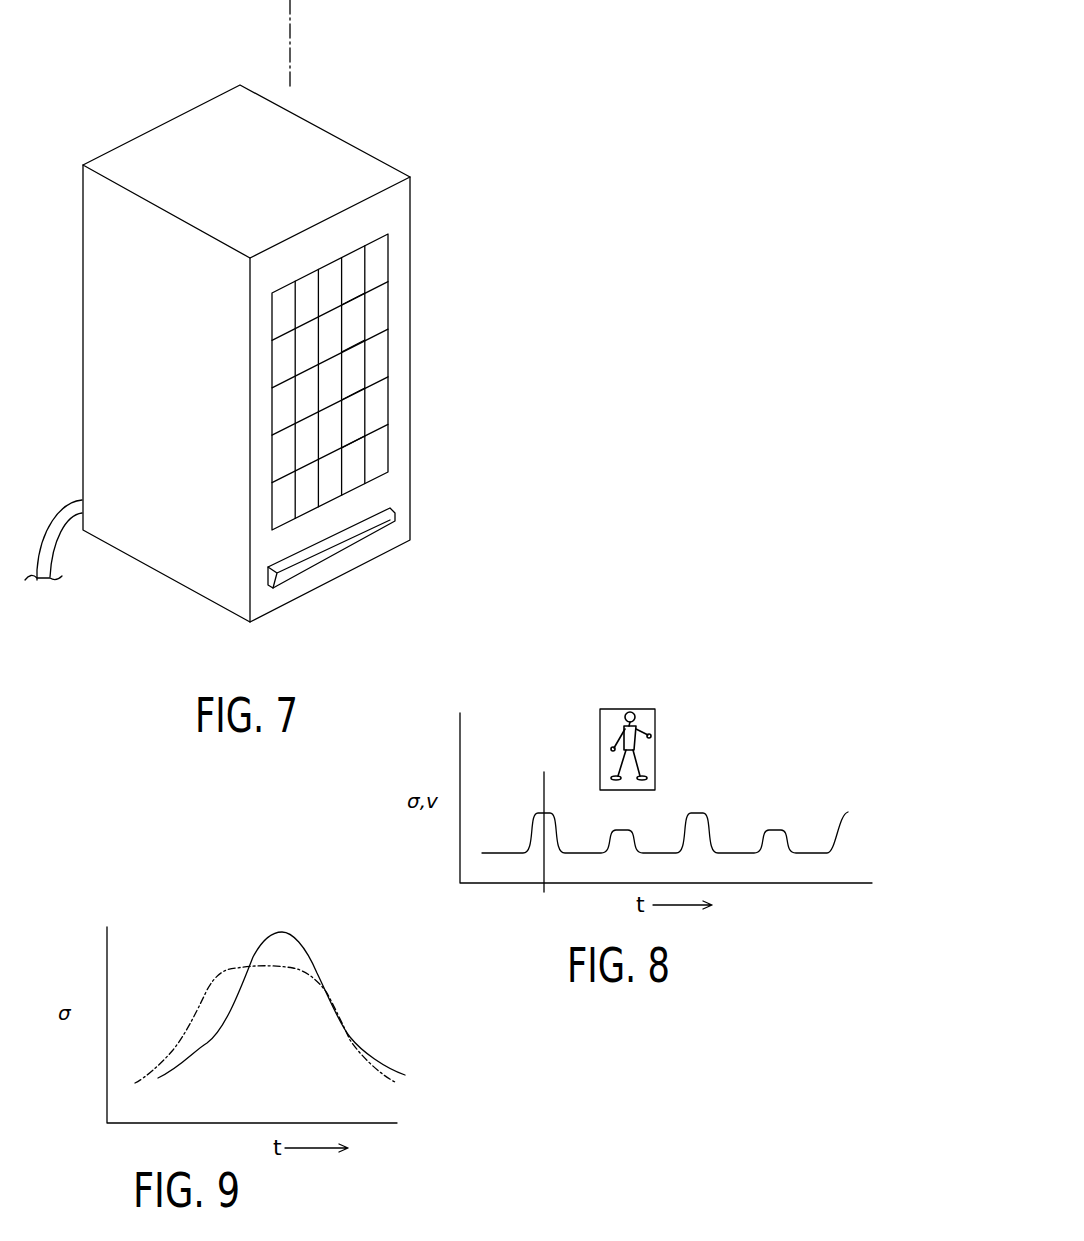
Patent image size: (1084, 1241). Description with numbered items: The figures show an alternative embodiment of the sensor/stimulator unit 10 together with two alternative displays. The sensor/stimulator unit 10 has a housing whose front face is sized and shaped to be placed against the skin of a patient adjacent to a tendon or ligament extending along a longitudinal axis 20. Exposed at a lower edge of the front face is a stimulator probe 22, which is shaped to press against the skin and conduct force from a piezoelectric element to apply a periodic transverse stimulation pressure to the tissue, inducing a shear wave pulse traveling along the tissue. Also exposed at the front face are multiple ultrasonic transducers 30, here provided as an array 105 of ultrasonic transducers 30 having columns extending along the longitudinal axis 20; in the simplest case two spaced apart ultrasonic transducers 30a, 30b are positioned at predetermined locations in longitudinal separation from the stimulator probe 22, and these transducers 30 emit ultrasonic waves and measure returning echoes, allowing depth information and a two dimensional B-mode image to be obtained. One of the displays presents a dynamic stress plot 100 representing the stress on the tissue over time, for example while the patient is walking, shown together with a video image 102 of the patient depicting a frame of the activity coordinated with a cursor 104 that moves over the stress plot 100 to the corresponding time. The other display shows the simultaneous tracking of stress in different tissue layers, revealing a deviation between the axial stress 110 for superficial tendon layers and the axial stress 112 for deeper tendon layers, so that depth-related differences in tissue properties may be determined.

In FIG. 7, the sensor/stimulator unit 10 is at (137, 148).
In FIG. 7, the longitudinal axis 20 is at (292, 40).
In FIG. 7, the ultrasonic transducers 30 is at (330, 270).
In FIG. 7, the ultrasonic transducer 30a is at (353, 323).
In FIG. 7, the ultrasonic transducer 30b is at (355, 433).
In FIG. 7, the stimulator probe 22 is at (281, 577).
In FIG. 7, the array of ultrasonic transducers 105 is at (167, 567).
In FIG. 8, the dynamic stress plot 100 is at (702, 813).
In FIG. 8, the video image 102 is at (628, 709).
In FIG. 8, the cursor 104 is at (544, 785).
In FIG. 9, the axial stress 110 is at (297, 933).
In FIG. 9, the axial stress 112 is at (227, 972).